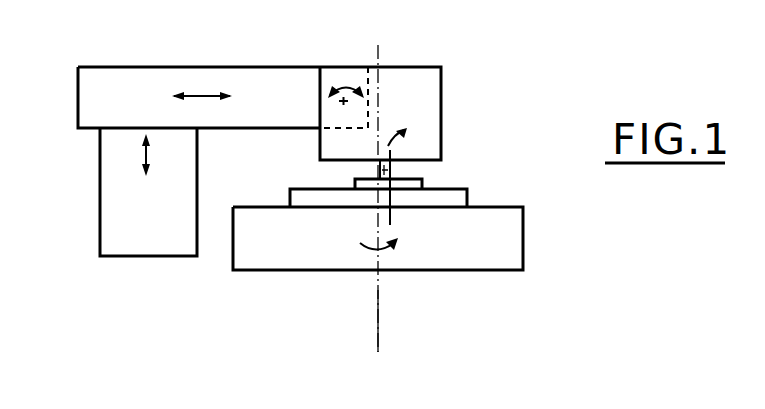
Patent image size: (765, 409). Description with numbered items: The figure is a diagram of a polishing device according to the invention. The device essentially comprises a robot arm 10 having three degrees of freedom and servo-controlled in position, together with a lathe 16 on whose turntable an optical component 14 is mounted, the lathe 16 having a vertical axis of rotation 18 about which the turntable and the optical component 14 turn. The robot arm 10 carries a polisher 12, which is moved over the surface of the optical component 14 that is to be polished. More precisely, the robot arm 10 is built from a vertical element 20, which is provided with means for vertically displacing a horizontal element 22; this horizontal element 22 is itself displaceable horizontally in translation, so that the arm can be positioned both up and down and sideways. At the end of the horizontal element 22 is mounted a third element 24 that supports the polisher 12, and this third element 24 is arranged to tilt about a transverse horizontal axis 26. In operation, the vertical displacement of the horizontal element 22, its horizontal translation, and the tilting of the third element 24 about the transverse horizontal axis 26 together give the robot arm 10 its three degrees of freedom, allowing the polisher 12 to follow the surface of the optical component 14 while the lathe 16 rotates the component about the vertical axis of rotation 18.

The robot arm 10 is at (222, 62).
The polisher 12 is at (422, 182).
The optical component 14 is at (467, 190).
The lathe 16 is at (523, 235).
The vertical axis of rotation 18 is at (380, 322).
The vertical element 20 is at (100, 203).
The horizontal element 22 is at (78, 104).
The third element 24 is at (441, 99).
The transverse horizontal axis 26 is at (346, 104).